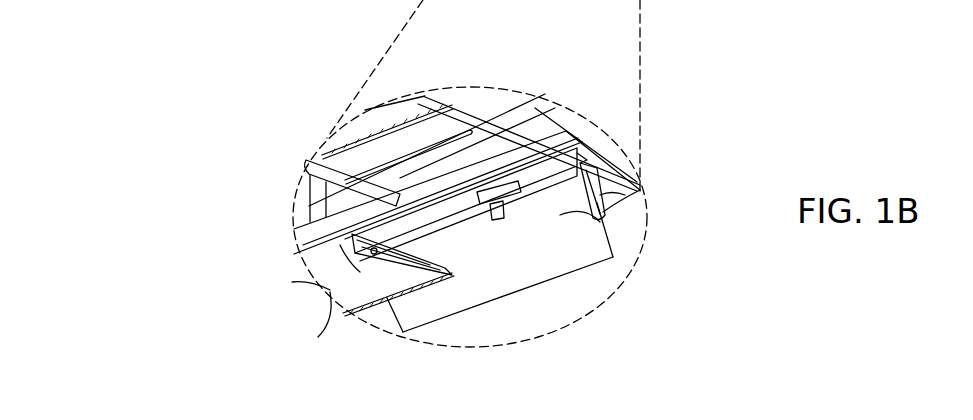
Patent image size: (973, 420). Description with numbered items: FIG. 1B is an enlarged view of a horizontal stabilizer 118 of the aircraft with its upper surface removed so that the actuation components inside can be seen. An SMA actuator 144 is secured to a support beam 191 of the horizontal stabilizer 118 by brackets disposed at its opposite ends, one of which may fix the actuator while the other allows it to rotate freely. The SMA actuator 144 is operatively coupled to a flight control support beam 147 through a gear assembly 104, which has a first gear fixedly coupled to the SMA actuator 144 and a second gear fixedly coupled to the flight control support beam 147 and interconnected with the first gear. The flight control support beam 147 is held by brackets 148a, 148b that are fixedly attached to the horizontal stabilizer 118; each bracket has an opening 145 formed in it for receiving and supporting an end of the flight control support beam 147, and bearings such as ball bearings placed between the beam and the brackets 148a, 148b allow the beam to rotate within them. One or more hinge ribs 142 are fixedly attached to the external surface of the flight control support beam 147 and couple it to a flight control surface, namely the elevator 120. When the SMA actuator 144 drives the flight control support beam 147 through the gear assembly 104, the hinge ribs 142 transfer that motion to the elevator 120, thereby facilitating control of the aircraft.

The support beam 191 is at (483, 178).
The SMA actuator 144 is at (513, 165).
The gear assembly 104 is at (497, 221).
The flight control support beam 147 is at (552, 197).
The bracket 148b is at (640, 189).
The hinge rib 142 is at (605, 205).
The opening 145 is at (365, 284).
The bracket 148a is at (357, 285).
The horizontal stabilizer 118 is at (335, 304).
The elevator 120 is at (466, 313).